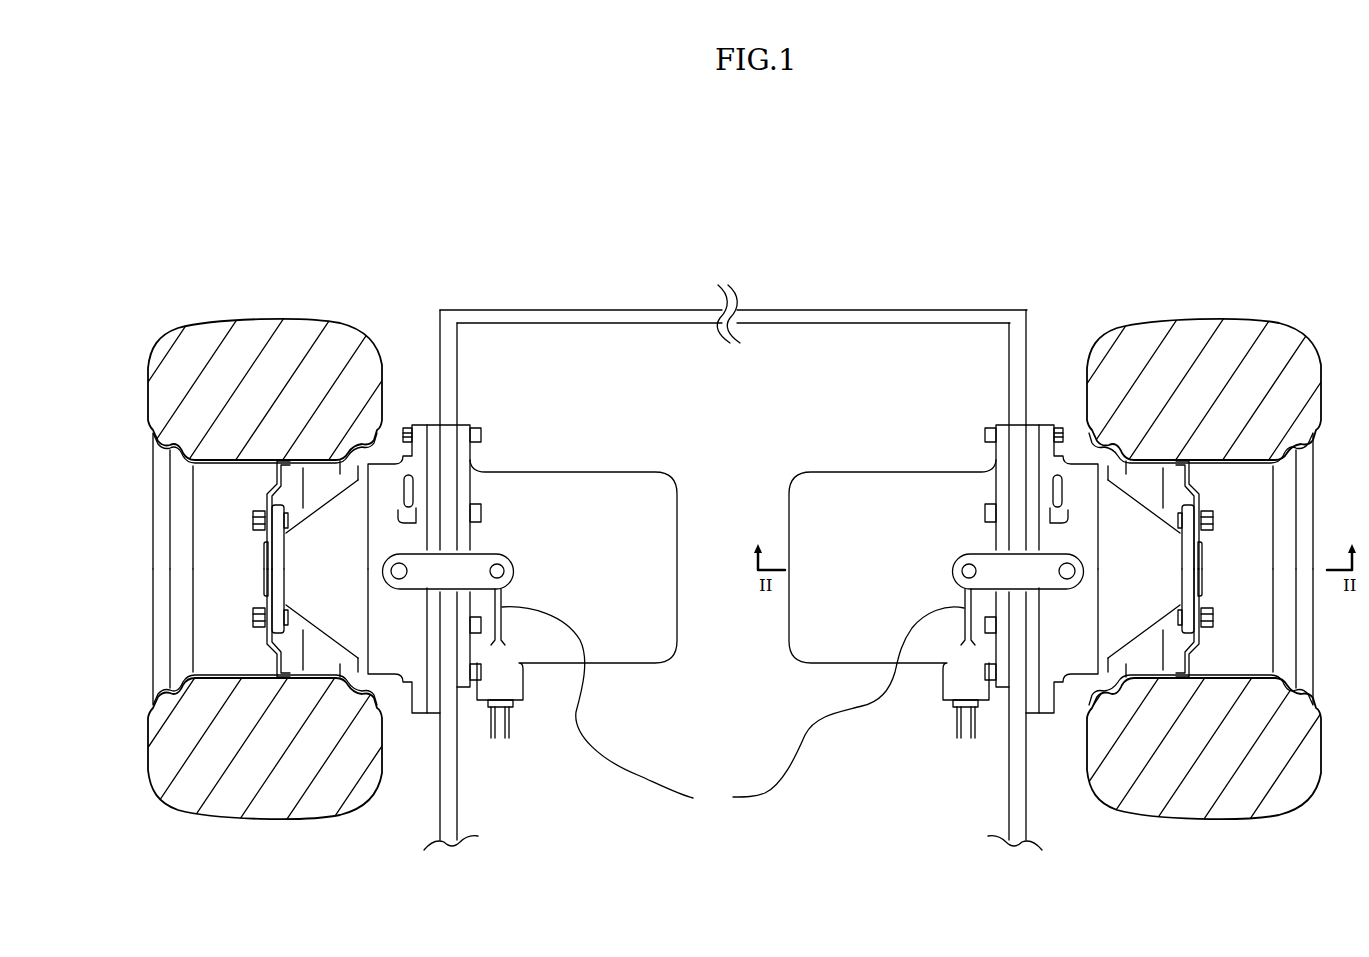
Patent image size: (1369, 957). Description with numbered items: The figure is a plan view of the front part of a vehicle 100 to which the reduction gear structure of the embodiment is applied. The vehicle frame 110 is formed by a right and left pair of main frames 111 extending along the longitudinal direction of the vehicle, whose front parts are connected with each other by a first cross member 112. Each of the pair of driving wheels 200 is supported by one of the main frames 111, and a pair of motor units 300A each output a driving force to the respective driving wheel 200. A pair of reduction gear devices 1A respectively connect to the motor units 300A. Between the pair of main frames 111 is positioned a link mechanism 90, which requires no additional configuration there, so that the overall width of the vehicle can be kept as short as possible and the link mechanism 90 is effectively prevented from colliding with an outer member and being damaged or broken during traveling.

The vehicle 100 is at (736, 514).
The vehicle frame 110 is at (736, 493).
The main frame 111 is at (440, 357).
The first cross member 112 is at (668, 309).
The driving wheel 200 is at (230, 283).
The motor unit 300A is at (612, 440).
The link mechanism 90 is at (733, 709).
The reduction gear device 1A is at (407, 714).